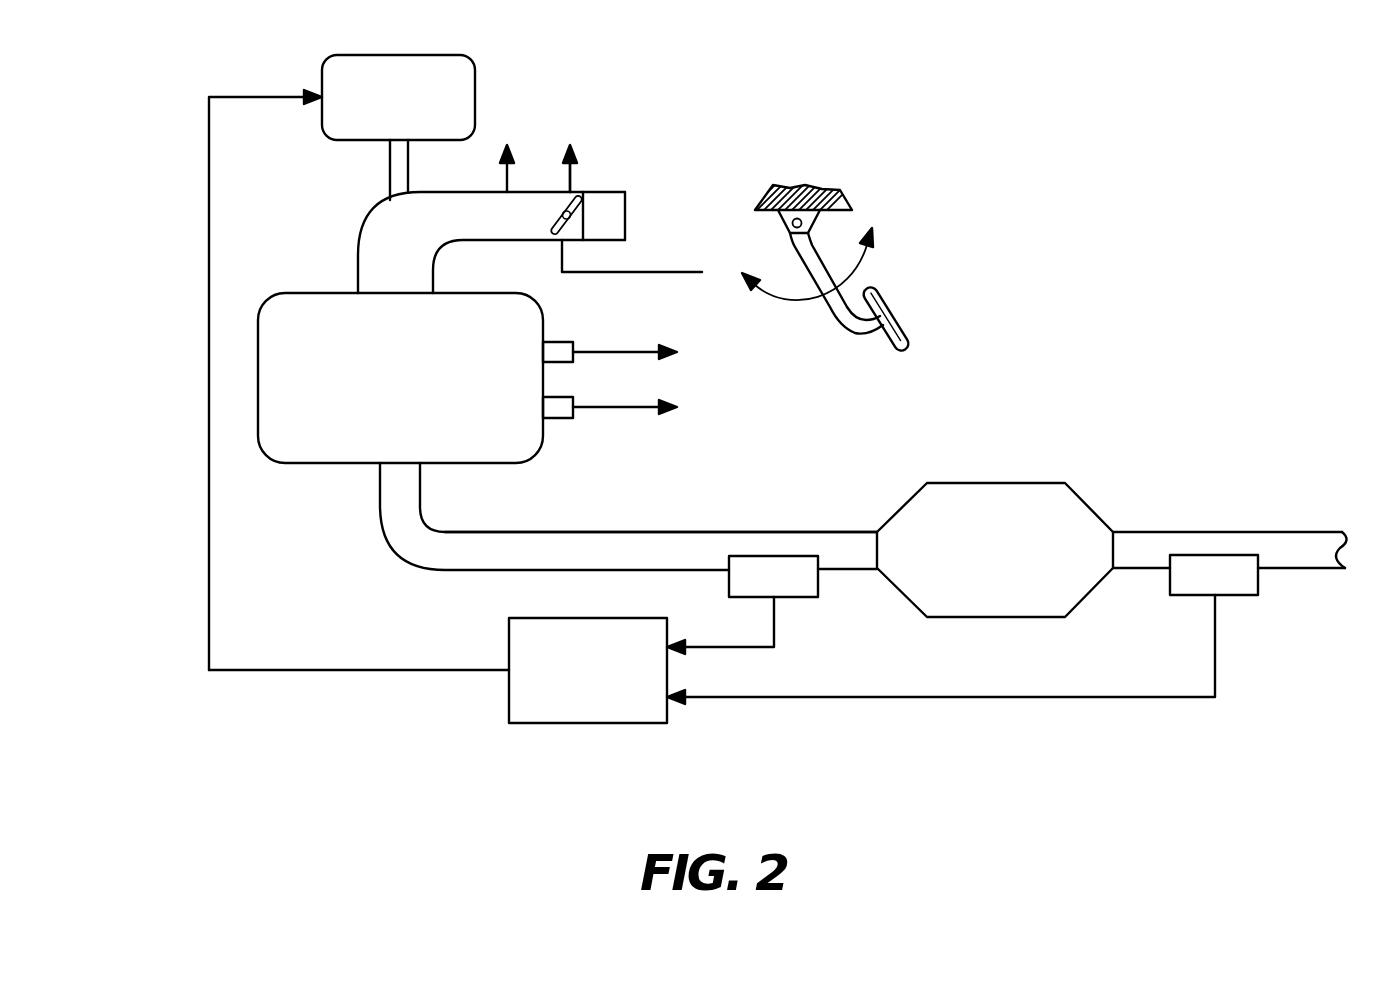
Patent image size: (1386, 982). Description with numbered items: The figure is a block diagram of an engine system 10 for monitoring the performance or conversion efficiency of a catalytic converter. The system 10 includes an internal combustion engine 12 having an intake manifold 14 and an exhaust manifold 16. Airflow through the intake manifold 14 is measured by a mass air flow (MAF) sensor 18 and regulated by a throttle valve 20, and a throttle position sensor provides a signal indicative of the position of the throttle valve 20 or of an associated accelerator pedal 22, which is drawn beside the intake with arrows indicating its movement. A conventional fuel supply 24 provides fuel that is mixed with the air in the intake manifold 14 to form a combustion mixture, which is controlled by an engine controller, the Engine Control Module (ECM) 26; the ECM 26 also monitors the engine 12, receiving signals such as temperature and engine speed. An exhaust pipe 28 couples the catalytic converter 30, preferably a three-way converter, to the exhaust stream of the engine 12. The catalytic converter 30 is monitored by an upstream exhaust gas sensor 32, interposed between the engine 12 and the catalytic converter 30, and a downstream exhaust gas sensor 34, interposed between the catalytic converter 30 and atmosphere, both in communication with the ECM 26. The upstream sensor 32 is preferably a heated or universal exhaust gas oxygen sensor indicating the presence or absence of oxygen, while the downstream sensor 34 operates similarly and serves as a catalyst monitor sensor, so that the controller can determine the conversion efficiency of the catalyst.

The system 10 is at (862, 199).
The internal combustion engine 12 is at (533, 453).
The intake manifold 14 is at (627, 202).
The exhaust manifold 16 is at (397, 548).
The mass air flow (MAF) sensor 18 is at (572, 177).
The throttle valve 20 is at (573, 215).
The accelerator pedal 22 is at (893, 316).
The fuel supply 24 is at (402, 55).
The Engine Control Module (ECM) 26 is at (509, 638).
The exhaust pipe 28 is at (683, 530).
The catalytic converter 30 is at (1077, 497).
The upstream exhaust gas sensor 32 is at (805, 598).
The downstream exhaust gas sensor 34 is at (1260, 595).